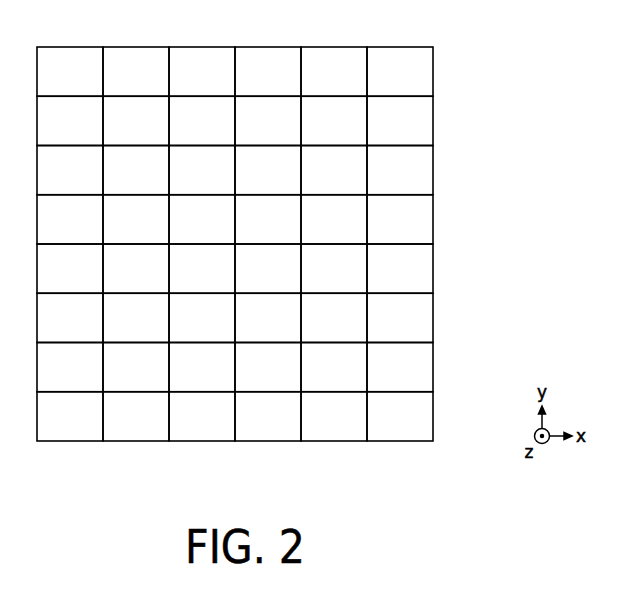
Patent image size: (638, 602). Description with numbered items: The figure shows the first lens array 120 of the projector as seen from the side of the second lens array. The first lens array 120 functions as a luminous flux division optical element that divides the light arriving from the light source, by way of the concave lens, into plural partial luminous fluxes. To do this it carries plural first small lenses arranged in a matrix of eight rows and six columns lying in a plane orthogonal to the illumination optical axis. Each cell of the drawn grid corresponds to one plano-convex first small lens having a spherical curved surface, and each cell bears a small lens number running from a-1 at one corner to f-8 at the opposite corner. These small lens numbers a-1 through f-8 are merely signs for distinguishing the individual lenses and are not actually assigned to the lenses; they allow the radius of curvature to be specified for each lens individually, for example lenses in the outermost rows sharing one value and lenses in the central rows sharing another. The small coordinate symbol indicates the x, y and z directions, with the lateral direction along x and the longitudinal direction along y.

The first lens array 120 is at (538, 31).
The small lens number a-1 is at (70, 71).
The small lens number f-8 is at (400, 416).